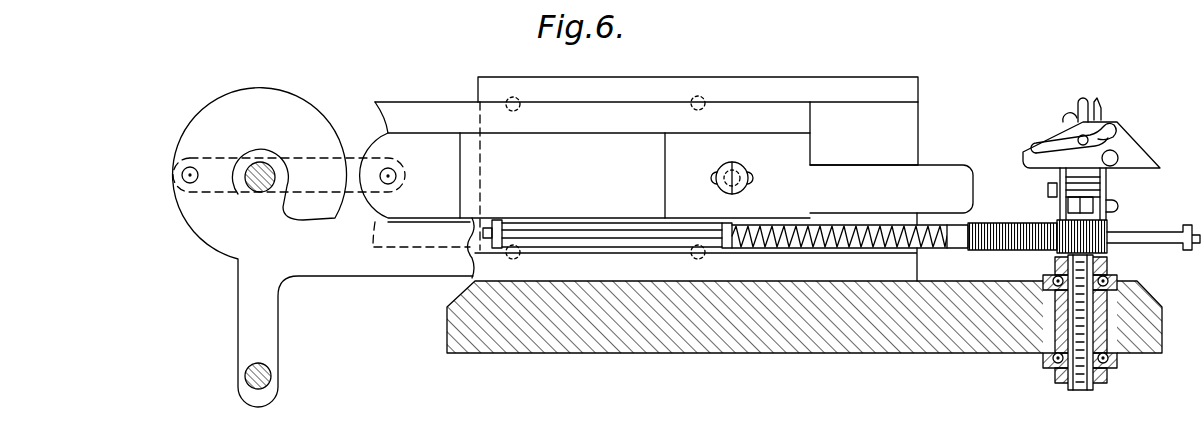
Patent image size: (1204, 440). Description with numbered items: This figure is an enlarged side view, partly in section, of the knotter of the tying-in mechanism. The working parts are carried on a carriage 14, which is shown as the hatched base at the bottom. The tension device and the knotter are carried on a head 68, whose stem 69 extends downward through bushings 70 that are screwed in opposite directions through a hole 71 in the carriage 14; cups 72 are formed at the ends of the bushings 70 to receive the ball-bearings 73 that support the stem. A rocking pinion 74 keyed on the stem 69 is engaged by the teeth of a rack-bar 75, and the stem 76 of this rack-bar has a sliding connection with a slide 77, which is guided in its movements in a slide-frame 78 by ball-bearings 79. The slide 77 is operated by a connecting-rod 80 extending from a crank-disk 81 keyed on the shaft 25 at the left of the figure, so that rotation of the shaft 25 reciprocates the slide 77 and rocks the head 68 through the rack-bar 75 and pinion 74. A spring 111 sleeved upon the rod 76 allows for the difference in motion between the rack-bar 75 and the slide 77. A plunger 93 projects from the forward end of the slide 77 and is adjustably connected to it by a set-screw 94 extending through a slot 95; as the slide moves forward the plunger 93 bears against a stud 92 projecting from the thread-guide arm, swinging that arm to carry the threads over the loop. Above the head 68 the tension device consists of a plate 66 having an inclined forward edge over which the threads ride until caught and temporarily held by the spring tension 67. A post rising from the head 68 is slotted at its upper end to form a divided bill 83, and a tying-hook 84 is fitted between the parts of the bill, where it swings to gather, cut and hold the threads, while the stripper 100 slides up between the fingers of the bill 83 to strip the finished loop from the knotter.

The carriage 14 is at (822, 352).
The shaft 25 is at (262, 162).
The plate 66 is at (1142, 150).
The spring tension 67 is at (1114, 124).
The head 68 is at (1060, 213).
The stem 69 is at (1053, 368).
The bushings 70 is at (1108, 333).
The hole 71 is at (1057, 330).
The cups 72 is at (1113, 278).
The ball-bearings 73 is at (1107, 362).
The rocking pinion 74 is at (1112, 230).
The rack-bar 75 is at (1002, 249).
The stem of rack-bar 76 is at (605, 236).
The slide 77 is at (512, 218).
The slide-frame 78 is at (806, 78).
The ball-bearings 79 is at (513, 112).
The connecting-rod 80 is at (352, 160).
The crank-disk 81 is at (251, 104).
The divided bill 83 is at (1085, 99).
The tying-hook 84 is at (1100, 106).
The stud 92 is at (1113, 205).
The plunger 93 is at (940, 172).
The set-screw 94 is at (742, 166).
The slot 95 is at (752, 180).
The stripper 100 is at (1068, 117).
The spring 111 is at (868, 247).